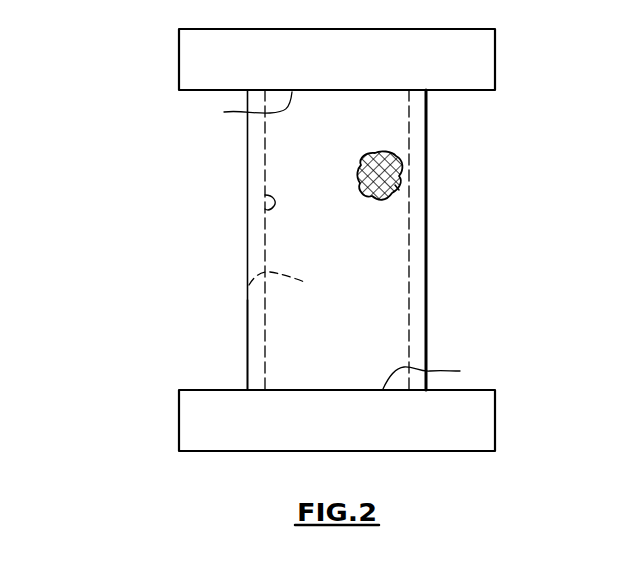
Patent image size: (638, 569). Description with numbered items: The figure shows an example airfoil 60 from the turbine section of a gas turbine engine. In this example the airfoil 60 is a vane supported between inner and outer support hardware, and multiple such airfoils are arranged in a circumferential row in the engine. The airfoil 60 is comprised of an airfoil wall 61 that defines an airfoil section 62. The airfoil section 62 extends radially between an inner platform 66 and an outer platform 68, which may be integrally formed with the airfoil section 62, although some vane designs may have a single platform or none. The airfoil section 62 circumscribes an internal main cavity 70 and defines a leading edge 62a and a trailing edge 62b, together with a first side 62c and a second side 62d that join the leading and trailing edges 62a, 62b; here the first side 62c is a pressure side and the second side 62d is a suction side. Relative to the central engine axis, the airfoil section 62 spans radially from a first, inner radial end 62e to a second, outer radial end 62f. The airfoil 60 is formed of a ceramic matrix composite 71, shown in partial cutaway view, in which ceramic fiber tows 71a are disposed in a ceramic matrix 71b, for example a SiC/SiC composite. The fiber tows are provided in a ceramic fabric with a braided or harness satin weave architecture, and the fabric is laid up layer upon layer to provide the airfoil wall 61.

The airfoil 60 is at (137, 318).
The airfoil wall 61 is at (247, 365).
The airfoil section 62 is at (345, 240).
The leading edge 62a is at (247, 147).
The trailing edge 62b is at (428, 143).
The first side 62c is at (415, 290).
The second side 62d is at (249, 285).
The first radial end 62e is at (445, 374).
The second radial end 62f is at (238, 109).
The inner platform 66 is at (489, 423).
The outer platform 68 is at (489, 62).
The internal main cavity 70 is at (264, 207).
The ceramic matrix composite 71 is at (432, 192).
The ceramic fiber tows 71a is at (398, 172).
The ceramic matrix 71b is at (400, 197).